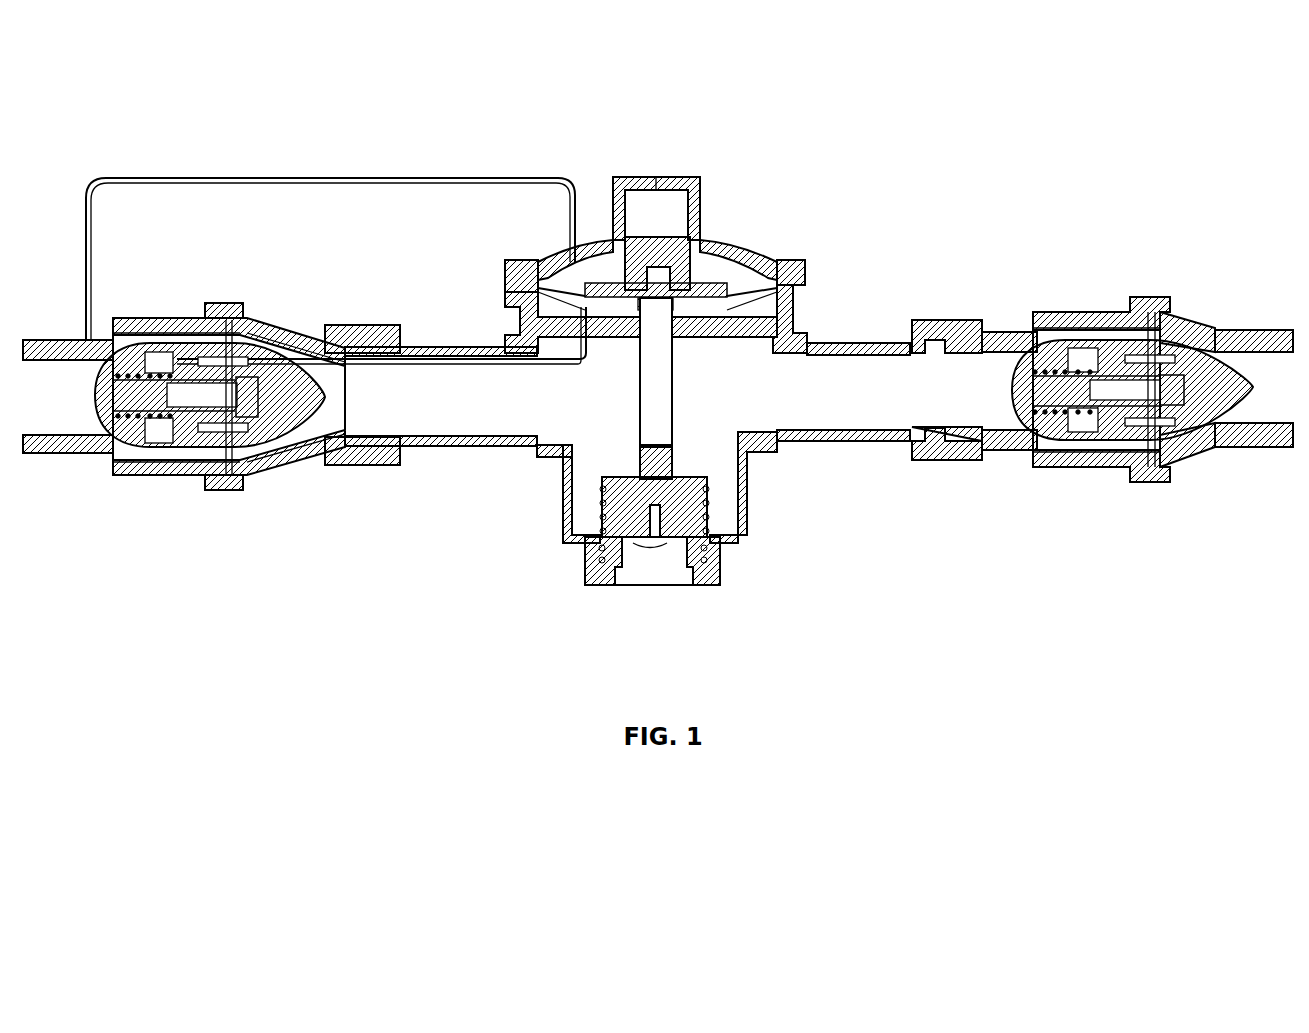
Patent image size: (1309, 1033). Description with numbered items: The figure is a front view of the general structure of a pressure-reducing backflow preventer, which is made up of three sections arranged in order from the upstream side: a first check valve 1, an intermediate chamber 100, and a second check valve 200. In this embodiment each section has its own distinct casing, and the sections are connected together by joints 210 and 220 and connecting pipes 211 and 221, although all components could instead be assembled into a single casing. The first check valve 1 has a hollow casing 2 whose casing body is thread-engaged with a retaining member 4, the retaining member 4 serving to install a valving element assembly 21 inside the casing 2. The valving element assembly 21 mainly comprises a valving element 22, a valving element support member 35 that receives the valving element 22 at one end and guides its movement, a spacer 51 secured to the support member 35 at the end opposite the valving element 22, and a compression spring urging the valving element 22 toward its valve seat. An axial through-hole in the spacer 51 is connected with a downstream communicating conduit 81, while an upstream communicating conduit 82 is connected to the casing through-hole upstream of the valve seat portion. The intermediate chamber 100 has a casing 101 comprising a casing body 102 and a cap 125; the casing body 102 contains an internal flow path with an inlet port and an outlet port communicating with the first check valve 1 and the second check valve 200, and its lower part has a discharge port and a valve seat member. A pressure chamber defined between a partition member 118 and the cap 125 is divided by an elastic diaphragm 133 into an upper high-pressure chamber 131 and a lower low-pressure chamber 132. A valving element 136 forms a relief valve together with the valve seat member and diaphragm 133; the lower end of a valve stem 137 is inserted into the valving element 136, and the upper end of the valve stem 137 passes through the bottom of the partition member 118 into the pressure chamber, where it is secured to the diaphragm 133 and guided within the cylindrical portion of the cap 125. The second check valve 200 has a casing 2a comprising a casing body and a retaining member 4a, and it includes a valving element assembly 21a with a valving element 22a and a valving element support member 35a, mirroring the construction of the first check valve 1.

The first check valve 1 is at (171, 530).
The casing 2 is at (137, 478).
The retaining member 4 is at (283, 455).
The valving element assembly 21 is at (196, 455).
The valving element 22 is at (78, 455).
The valving element support member 35 is at (166, 480).
The spacer 51 is at (302, 440).
The downstream communicating conduit 81 is at (494, 366).
The upstream communicating conduit 82 is at (433, 178).
The intermediate chamber 100 is at (519, 530).
The casing 101 is at (772, 208).
The casing body 102 is at (737, 548).
The partition member 118 is at (795, 326).
The cap 125 is at (713, 242).
The high-pressure chamber 131 is at (596, 268).
The low-pressure chamber 132 is at (760, 298).
The diaphragm 133 is at (752, 283).
The valving element 136 is at (706, 522).
The valve stem 137 is at (660, 430).
The second check valve 200 is at (1062, 522).
The casing 2a is at (1043, 312).
The retaining member 4a is at (1212, 457).
The valving element assembly 21a is at (1100, 312).
The valving element 22a is at (1014, 452).
The valving element support member 35a is at (1110, 484).
The joint 210 is at (372, 468).
The connecting pipe 211 is at (427, 466).
The joint 220 is at (950, 462).
The connecting pipe 221 is at (858, 443).